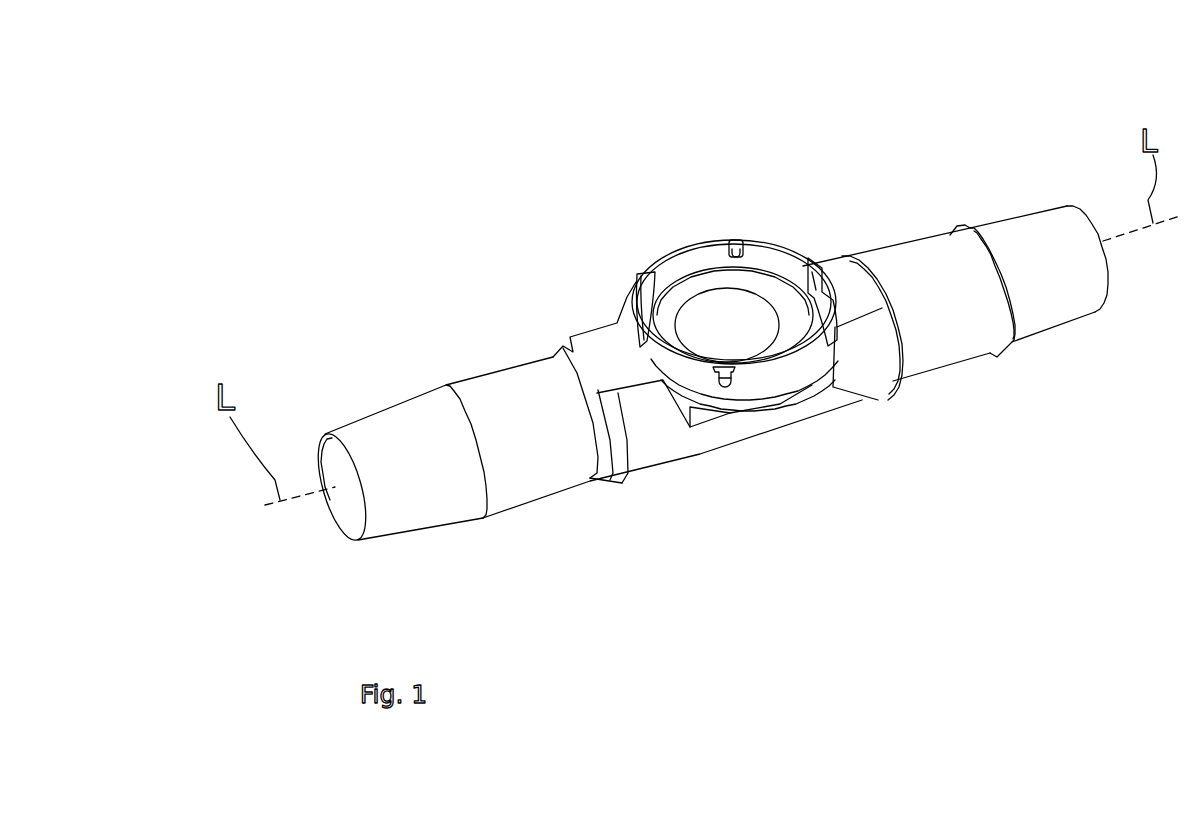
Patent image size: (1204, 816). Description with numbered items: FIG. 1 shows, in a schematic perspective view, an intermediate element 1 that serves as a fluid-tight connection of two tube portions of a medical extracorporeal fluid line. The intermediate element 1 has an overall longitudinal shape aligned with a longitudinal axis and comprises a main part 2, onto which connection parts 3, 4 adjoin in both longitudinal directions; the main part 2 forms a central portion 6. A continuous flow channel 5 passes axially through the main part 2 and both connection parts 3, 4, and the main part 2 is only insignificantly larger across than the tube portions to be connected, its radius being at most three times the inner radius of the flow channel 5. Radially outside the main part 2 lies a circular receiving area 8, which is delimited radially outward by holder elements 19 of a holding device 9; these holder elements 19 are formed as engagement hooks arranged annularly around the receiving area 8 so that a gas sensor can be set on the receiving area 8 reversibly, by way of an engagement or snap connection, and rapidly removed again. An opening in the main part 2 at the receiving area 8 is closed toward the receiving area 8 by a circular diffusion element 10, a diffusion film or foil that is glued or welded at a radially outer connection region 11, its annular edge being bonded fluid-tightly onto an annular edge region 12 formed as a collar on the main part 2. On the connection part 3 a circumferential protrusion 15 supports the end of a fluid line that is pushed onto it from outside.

The intermediate element 1 is at (352, 145).
The main part 2 is at (650, 470).
The connection part 3 is at (492, 377).
The connection part 4 is at (913, 247).
The flow channel 5 is at (352, 513).
The central portion 6 is at (907, 425).
The receiving area 8 is at (734, 296).
The holding device 9 is at (733, 232).
The diffusion element 10 is at (697, 320).
The connection region 11 is at (784, 299).
The edge region 12 is at (667, 320).
The circumferential protrusion 15 is at (973, 223).
The holder elements 19 is at (693, 247).